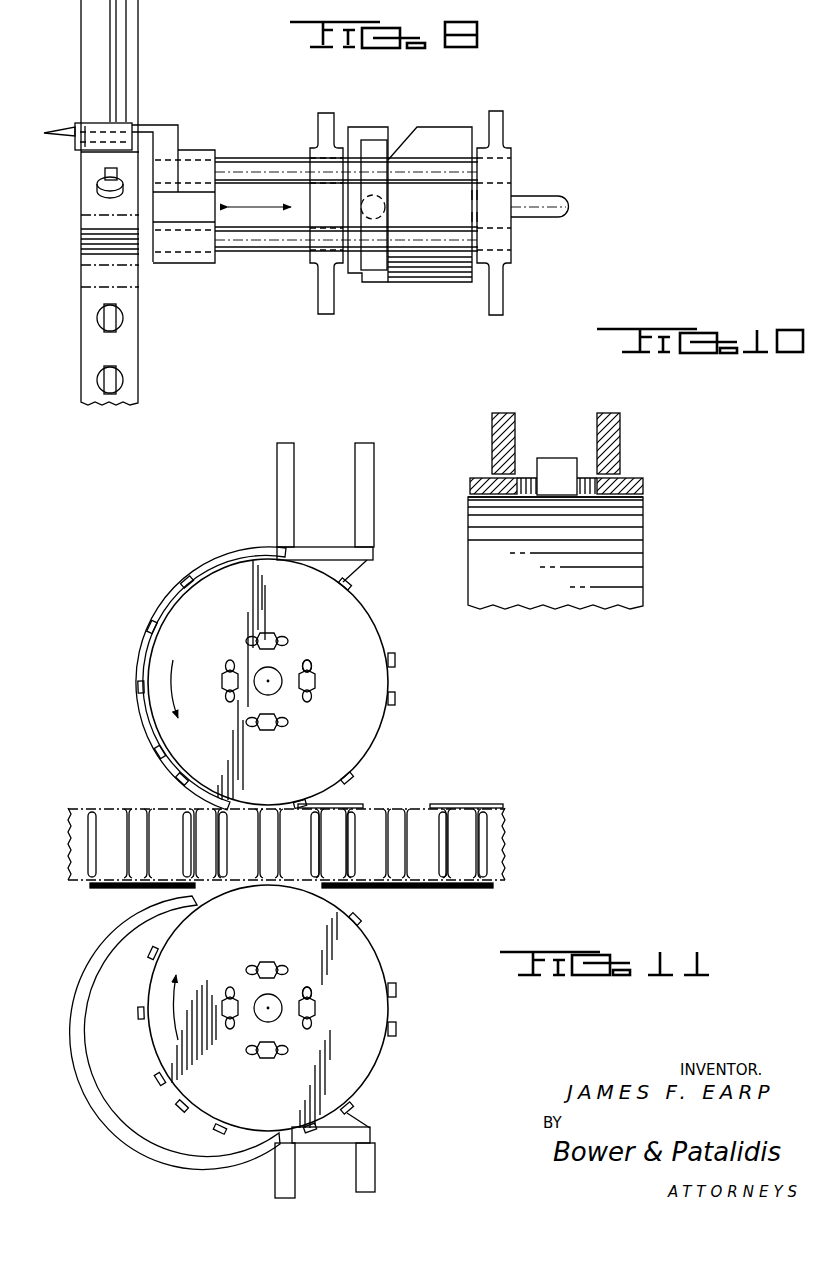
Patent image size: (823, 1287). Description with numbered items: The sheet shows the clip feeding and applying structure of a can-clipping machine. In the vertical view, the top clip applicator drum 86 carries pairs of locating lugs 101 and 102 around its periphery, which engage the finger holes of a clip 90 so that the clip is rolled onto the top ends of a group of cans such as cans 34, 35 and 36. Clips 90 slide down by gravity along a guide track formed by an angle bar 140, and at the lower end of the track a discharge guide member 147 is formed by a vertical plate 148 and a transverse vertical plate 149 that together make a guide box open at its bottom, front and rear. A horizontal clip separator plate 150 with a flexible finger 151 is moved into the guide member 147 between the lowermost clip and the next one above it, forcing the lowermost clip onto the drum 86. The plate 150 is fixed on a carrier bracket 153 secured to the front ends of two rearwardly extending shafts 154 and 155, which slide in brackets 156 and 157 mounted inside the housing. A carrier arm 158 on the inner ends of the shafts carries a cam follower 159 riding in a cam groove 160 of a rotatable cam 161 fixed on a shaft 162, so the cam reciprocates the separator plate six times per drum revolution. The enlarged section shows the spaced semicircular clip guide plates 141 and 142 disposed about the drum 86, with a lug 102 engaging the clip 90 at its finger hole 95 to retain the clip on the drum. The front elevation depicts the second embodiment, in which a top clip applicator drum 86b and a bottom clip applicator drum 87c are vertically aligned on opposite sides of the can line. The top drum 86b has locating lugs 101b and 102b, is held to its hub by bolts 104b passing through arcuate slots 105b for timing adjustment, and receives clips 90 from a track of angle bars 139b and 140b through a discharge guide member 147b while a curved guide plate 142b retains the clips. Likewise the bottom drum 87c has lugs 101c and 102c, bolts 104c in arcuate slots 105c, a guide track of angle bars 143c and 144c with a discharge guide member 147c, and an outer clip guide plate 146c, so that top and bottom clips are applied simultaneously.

In FIG. 11, the can 34 is at (286, 857).
In FIG. 11, the can 35 is at (180, 893).
In FIG. 11, the can 36 is at (240, 860).
In FIG. 9, the top clip applicator drum 86 is at (90, 265).
In FIG. 10, the top clip applicator drum 86 is at (640, 562).
In FIG. 11, the top clip applicator drum 86b is at (290, 682).
In FIG. 11, the bottom clip applicator drum 87c is at (289, 1008).
In FIG. 9, the clip 90 is at (100, 160).
In FIG. 10, the clip 90 is at (642, 476).
In FIG. 11, the clip 90 is at (185, 590).
In FIG. 10, the finger grip hole 95 is at (585, 497).
In FIG. 9, the locating lug 101 is at (97, 318).
In FIG. 9, the locating lug 102 is at (112, 190).
In FIG. 10, the locating lug 102 is at (552, 462).
In FIG. 11, the locating lug 101b is at (395, 660).
In FIG. 11, the locating lug 102b is at (395, 698).
In FIG. 11, the locating lug 101c is at (396, 992).
In FIG. 11, the locating lug 102c is at (396, 1030).
In FIG. 11, the bolt 104b is at (312, 677).
In FIG. 11, the arcuate slot 105b is at (308, 667).
In FIG. 11, the bolt 104c is at (312, 1008).
In FIG. 11, the arcuate slot 105c is at (310, 995).
In FIG. 11, the angle bar 139b is at (283, 491).
In FIG. 9, the angle bar 140 is at (128, 70).
In FIG. 11, the angle bar 140b is at (365, 495).
In FIG. 10, the clip guide plate 141 is at (500, 437).
In FIG. 10, the clip guide plate 142 is at (610, 440).
In FIG. 11, the clip guide plate 142b is at (197, 570).
In FIG. 11, the angle bar 143c is at (283, 1170).
In FIG. 11, the angle bar 144c is at (368, 1175).
In FIG. 11, the clip guide plate 146c is at (200, 1118).
In FIG. 9, the discharge guide member 147 is at (69, 142).
In FIG. 11, the discharge guide member 147b is at (373, 560).
In FIG. 11, the discharge guide member 147c is at (375, 1132).
In FIG. 9, the vertical plate 148 is at (76, 140).
In FIG. 9, the vertical plate 149 is at (108, 145).
In FIG. 9, the clip separator plate 150 is at (142, 125).
In FIG. 9, the flexible finger 151 is at (62, 128).
In FIG. 9, the carrier bracket 153 is at (185, 140).
In FIG. 9, the shaft 154 is at (270, 165).
In FIG. 9, the shaft 155 is at (288, 240).
In FIG. 9, the bracket 156 is at (322, 290).
In FIG. 9, the bracket 157 is at (500, 298).
In FIG. 9, the carrier arm 158 is at (378, 260).
In FIG. 9, the cam follower 159 is at (388, 207).
In FIG. 9, the cam groove 160 is at (393, 155).
In FIG. 9, the cam 161 is at (450, 135).
In FIG. 9, the shaft 162 is at (548, 200).